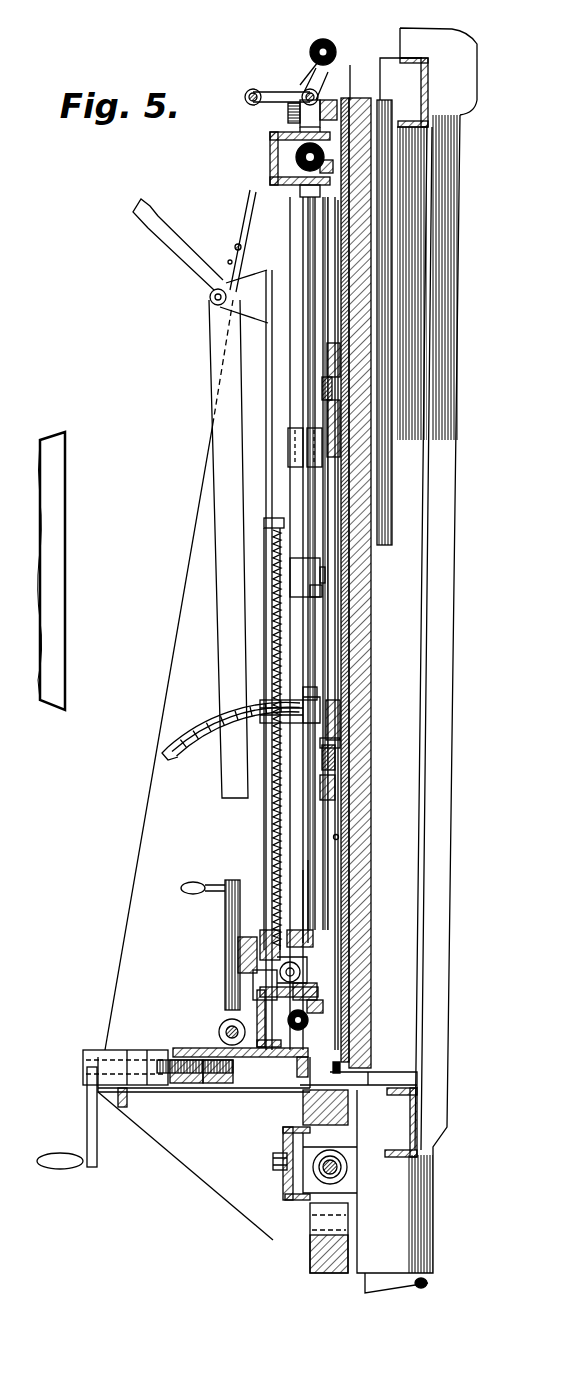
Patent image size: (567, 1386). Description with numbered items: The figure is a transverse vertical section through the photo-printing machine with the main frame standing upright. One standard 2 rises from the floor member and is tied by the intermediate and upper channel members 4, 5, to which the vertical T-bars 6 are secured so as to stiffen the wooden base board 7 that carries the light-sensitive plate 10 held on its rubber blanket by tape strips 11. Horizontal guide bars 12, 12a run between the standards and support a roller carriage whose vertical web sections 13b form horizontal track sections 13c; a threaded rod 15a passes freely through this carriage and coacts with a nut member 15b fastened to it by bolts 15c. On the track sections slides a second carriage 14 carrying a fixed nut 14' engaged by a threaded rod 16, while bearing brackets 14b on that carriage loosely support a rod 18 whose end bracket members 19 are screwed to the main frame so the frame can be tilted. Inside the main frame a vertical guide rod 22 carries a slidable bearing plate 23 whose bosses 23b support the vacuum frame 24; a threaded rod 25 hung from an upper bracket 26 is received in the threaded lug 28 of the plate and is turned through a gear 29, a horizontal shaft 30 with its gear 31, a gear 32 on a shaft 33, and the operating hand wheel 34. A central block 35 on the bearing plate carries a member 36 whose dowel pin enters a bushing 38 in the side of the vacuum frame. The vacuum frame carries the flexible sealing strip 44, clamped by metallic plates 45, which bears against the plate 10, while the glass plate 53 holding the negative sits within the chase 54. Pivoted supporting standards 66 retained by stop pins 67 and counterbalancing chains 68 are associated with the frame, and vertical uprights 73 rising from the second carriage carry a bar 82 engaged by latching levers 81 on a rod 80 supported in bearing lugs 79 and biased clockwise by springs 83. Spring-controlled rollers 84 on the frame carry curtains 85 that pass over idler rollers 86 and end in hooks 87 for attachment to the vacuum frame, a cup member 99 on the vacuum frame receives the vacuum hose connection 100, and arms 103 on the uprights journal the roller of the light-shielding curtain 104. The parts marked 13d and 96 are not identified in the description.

The standard 2 is at (427, 1284).
The intermediate channel member 4 is at (417, 1115).
The upper channel member 5 is at (418, 78).
The T-bar 6 is at (452, 613).
The base board 7 is at (357, 688).
The light-sensitive plate 10 is at (350, 385).
The tape strips 11 is at (345, 342).
The guide bar 12 is at (320, 1107).
The guide bar 12a is at (318, 1258).
The vertical web section 13b is at (208, 1187).
The horizontal track section 13c is at (220, 1092).
The crank 13d is at (112, 1058).
The second carriage 14 is at (129, 1053).
The fixed nut 14' is at (195, 1093).
The bearing bracket 14b is at (258, 1030).
The threaded rod 15a is at (343, 1177).
The nut member 15b is at (300, 1180).
The bolts 15c is at (278, 1162).
The threaded rod 16 is at (228, 1083).
The rod 18 is at (221, 1031).
The bracket member 19 is at (254, 986).
The vertical guide rod 22 is at (307, 293).
The bearing plate 23 is at (290, 468).
The boss 23b is at (320, 445).
The vacuum frame 24 is at (368, 503).
The threaded rod 25 is at (275, 828).
The upper bracket 26 is at (268, 523).
The laterally projecting lug 28 is at (292, 723).
The gear 29 is at (262, 950).
The shaft 30 is at (311, 990).
The gear 31 is at (301, 970).
The gear 32 is at (306, 933).
The shaft 33 is at (305, 880).
The hand wheel 34 is at (230, 913).
The block 35 is at (300, 570).
The member 36 is at (320, 580).
The bushing 38 is at (325, 388).
The sealing strip 44 is at (345, 548).
The metallic plate 45 is at (332, 743).
The glass plate 53 is at (347, 638).
The chase 54 is at (336, 720).
The standard 66 is at (226, 475).
The stop pin 67 is at (138, 222).
The chain 68 is at (240, 236).
The vertical upright 73 is at (180, 740).
The bearing lug 79 is at (290, 113).
The rod 80 is at (305, 92).
The latching lever 81 is at (270, 92).
The bar 82 is at (322, 100).
The spring 83 is at (300, 120).
The spring-controlled roller 84 is at (272, 160).
The curtain 85 is at (300, 178).
The idler roller 86 is at (306, 186).
The hook 87 is at (328, 360).
The plate 96 is at (60, 530).
The cup member 99 is at (310, 695).
The hose connection 100 is at (167, 752).
The arm 103 is at (300, 84).
The curtain 104 is at (325, 39).